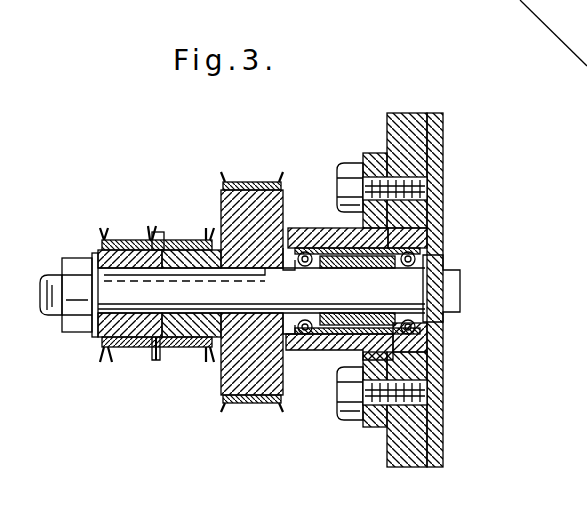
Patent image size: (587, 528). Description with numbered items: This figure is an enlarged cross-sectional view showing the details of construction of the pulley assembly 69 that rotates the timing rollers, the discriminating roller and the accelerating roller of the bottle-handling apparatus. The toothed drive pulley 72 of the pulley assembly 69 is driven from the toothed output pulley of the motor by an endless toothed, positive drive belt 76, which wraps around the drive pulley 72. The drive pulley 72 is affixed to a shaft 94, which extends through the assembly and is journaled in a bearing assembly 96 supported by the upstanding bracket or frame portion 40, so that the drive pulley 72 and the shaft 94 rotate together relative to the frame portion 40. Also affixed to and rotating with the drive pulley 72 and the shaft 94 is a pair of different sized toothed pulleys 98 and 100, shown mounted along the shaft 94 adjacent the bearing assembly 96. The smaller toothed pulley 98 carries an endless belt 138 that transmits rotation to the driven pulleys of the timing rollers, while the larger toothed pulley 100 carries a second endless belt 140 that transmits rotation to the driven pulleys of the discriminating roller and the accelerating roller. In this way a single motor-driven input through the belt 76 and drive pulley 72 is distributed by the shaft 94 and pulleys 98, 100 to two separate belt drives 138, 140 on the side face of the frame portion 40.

The upstanding bracket 40 is at (442, 356).
The pulley assembly 69 is at (124, 207).
The toothed drive pulley 72 is at (130, 352).
The positive drive belt 76 is at (142, 352).
The shaft 94 is at (97, 335).
The bearing assembly 96 is at (345, 245).
The toothed pulley 98 is at (188, 240).
The toothed pulley 100 is at (266, 185).
The endless belt 138 is at (192, 355).
The endless belt 140 is at (258, 402).